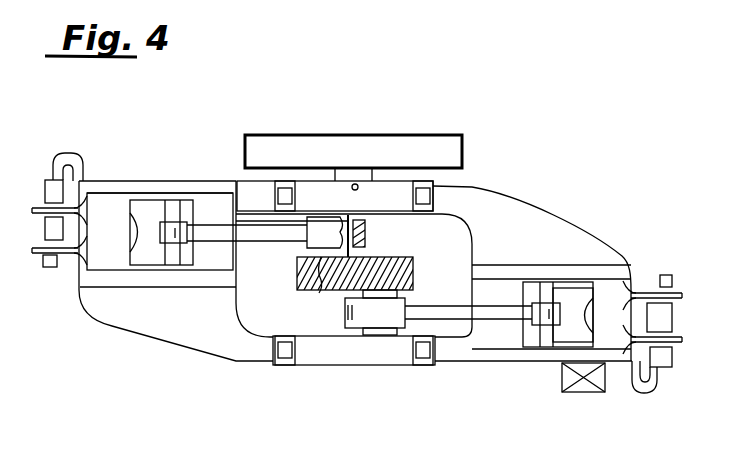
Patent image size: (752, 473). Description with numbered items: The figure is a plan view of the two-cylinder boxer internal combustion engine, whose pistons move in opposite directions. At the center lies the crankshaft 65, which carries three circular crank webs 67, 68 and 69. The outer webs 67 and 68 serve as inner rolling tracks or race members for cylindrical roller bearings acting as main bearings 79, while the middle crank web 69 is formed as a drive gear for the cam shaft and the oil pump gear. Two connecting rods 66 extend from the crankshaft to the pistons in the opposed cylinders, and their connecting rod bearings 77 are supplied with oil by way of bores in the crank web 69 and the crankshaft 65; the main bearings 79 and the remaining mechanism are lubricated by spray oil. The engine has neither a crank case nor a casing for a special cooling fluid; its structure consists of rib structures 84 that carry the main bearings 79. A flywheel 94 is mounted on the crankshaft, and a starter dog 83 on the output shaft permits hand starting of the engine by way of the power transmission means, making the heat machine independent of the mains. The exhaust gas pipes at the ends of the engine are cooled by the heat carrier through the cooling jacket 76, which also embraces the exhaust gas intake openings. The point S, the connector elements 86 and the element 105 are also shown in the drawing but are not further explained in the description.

The cooling jacket 76 is at (355, 265).
The flywheel 94 is at (326, 140).
The rib structures 84 is at (355, 266).
The starter dog 83 is at (335, 196).
The pivot point S is at (361, 197).
The connecting rod bearings 77 is at (376, 238).
The crank web 68 is at (354, 259).
The middle crank web 69 is at (370, 273).
The crankshaft 65 is at (324, 270).
The connecting rods 66 is at (361, 304).
The crank web 67 is at (354, 372).
The main bearings 79 is at (421, 372).
The connector pins 86 is at (356, 273).
The valve 105 is at (583, 396).